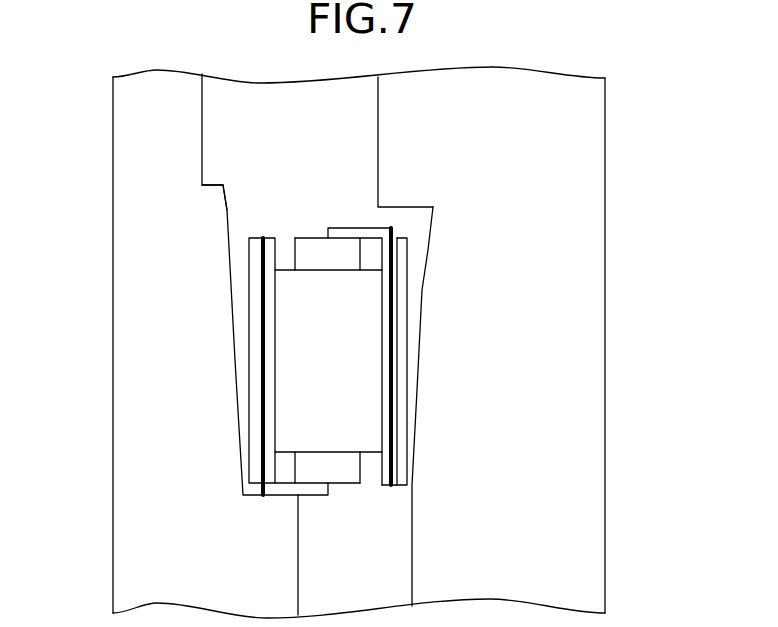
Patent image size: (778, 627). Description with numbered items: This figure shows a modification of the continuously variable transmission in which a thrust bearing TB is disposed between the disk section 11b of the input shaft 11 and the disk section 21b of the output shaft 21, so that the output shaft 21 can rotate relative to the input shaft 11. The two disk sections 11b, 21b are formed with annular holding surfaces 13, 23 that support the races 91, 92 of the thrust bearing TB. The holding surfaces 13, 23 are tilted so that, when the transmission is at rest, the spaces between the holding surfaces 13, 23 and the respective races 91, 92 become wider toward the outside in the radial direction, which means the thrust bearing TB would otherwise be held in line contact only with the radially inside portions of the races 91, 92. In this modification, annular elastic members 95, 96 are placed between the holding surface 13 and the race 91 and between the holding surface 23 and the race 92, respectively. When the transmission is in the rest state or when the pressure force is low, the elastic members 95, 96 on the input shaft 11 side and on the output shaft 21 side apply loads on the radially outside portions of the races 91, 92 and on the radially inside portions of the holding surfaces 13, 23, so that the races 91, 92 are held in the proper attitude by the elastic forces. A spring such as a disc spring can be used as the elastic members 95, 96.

The input shaft 11 is at (185, 344).
The disk section of input shaft 11b is at (113, 348).
The output shaft 21 is at (528, 345).
The disk section of output shaft 21b is at (606, 348).
The holding surface 13 is at (228, 215).
The holding surface 23 is at (430, 222).
The race 91 is at (268, 238).
The race 92 is at (395, 233).
The elastic member 95 is at (249, 315).
The elastic member 96 is at (407, 316).
The thrust bearing TB is at (350, 512).